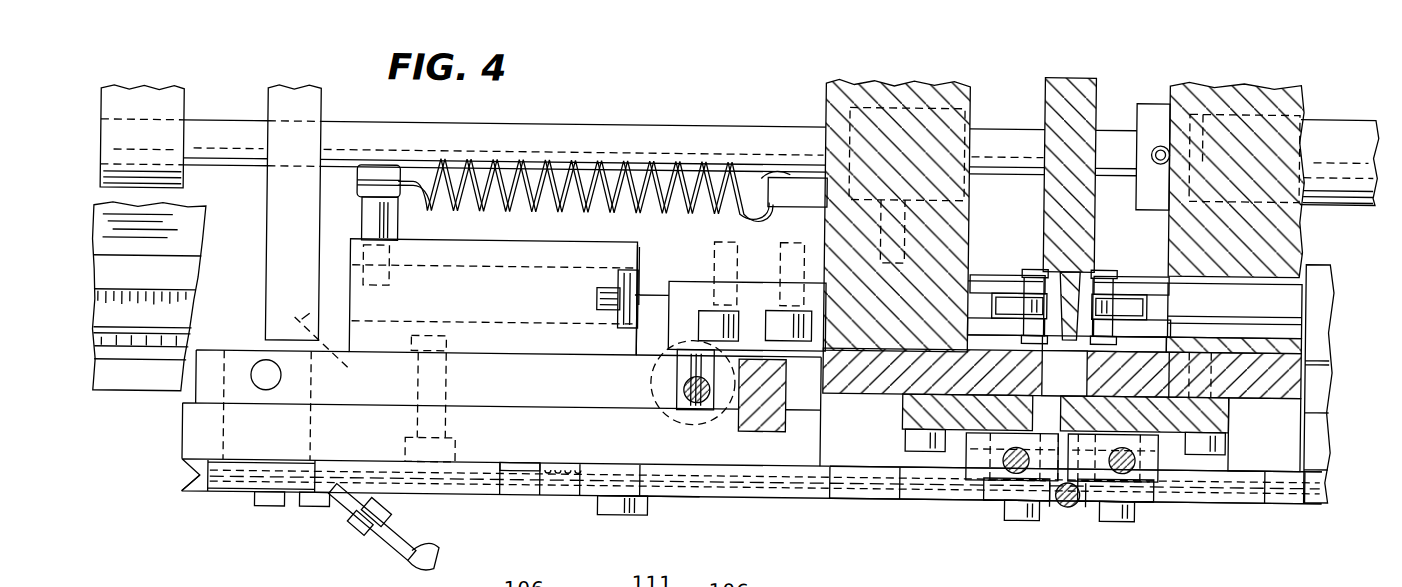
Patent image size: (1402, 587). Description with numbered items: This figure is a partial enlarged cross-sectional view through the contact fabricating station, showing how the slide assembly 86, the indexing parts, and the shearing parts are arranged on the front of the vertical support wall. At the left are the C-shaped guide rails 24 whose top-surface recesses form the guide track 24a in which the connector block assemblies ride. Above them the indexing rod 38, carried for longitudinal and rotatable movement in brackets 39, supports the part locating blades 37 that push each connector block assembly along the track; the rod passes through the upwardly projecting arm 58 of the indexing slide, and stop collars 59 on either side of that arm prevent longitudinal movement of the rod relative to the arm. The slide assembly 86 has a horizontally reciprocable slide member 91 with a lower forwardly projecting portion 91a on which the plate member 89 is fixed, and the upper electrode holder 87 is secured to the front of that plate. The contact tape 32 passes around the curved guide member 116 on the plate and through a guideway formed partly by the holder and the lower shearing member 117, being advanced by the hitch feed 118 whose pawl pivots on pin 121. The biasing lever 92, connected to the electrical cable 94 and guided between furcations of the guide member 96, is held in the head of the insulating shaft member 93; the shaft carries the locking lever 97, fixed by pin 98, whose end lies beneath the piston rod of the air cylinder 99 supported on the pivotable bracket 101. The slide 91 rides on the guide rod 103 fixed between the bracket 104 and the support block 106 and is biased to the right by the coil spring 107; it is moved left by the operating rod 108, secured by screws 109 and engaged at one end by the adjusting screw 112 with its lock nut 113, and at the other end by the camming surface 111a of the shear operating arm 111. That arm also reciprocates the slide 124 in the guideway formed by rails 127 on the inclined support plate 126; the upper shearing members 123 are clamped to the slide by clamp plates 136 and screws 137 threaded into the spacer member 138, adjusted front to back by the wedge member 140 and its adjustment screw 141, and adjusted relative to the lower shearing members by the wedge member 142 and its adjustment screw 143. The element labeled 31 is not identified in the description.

The guide rails 24 is at (190, 277).
The guide track 24a is at (168, 315).
The carriage assembly 31 is at (728, 500).
The contact tape 32 is at (193, 475).
The part locating blades 37 is at (910, 229).
The indexing rod 38 is at (630, 137).
The brackets 39 is at (173, 105).
The arm 58 is at (1335, 119).
The stop collars 59 is at (1155, 94).
The slide assembly 86 is at (270, 515).
The upper electrode holder 87 is at (833, 493).
The plate member 89 is at (743, 449).
The slide member 91 is at (605, 255).
The lower forwardly projecting portion 91a is at (311, 332).
The biasing lever 92 is at (485, 484).
The shaft member 93 is at (313, 461).
The electrical cable 94 is at (400, 545).
The guide member 96 is at (880, 485).
The upper electrode locking lever 97 is at (487, 349).
The pin 98 is at (260, 360).
The air cylinder 99 is at (652, 378).
The bracket 101 is at (740, 424).
The guide rod 103 is at (340, 270).
The bracket 104 is at (313, 103).
The support block 106 is at (840, 93).
The coil spring 107 is at (510, 156).
The operating rod 108 is at (967, 284).
The screws 109 is at (780, 316).
The shear operating arm 111 is at (1090, 108).
The camming surface 111a is at (1082, 250).
The adjusting screw 112 is at (596, 294).
The lock nut 113 is at (640, 292).
The curved guide member 116 is at (195, 492).
The lower shearing member 117 is at (837, 438).
The contact tape hitch feed 118 is at (560, 456).
The pin 121 is at (612, 486).
The upper shearing members 123 is at (1015, 481).
The slide 124 is at (1167, 396).
The inclined support plate 126 is at (857, 370).
The rails 127 is at (903, 414).
The clamp plates 136 is at (993, 494).
The screws 137 is at (1030, 513).
The spacer member 138 is at (988, 490).
The wedge member 140 is at (967, 488).
The adjustment screw 141 is at (968, 450).
The wedge member 142 is at (1090, 498).
The adjustment screw 143 is at (1067, 498).